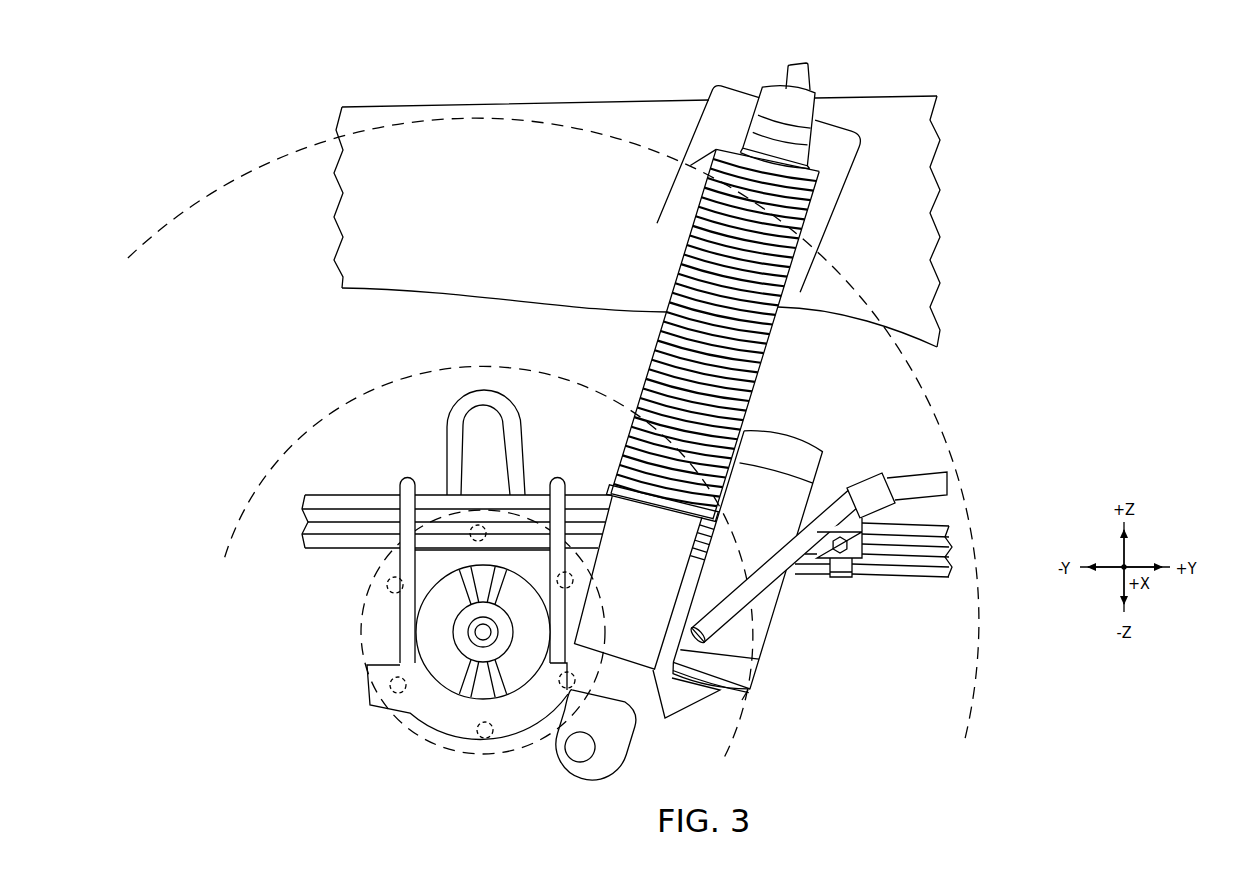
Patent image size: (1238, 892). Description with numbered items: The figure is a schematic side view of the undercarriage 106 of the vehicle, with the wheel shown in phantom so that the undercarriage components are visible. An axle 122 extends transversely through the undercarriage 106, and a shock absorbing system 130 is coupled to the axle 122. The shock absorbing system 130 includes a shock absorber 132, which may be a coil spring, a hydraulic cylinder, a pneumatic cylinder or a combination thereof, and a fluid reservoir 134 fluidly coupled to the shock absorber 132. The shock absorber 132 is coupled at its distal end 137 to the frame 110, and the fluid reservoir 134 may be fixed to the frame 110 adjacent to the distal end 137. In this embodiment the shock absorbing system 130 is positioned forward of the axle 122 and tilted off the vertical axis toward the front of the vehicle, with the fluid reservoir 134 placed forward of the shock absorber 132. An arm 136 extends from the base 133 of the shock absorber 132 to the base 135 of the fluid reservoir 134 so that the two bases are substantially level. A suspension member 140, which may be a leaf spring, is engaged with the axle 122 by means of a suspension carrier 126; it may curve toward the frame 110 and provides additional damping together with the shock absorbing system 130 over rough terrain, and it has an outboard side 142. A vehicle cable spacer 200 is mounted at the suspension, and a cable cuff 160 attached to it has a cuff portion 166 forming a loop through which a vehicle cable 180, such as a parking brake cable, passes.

The undercarriage 106 is at (256, 119).
The frame 110 is at (383, 99).
The axle 122 is at (417, 607).
The suspension carrier 126 is at (371, 698).
The shock absorbing system 130 is at (709, 421).
The shock absorber 132 is at (817, 164).
The base of the shock absorber 133 is at (575, 644).
The fluid reservoir 134 is at (794, 428).
The base of the fluid reservoir 135 is at (775, 700).
The arm 136 is at (678, 713).
The distal end of the shock absorber 137 is at (762, 79).
The suspension member 140 is at (351, 461).
The outboard side of the suspension member 142 is at (331, 495).
The cable cuff 160 is at (848, 479).
The cuff portion 166 is at (887, 473).
The vehicle cable 180 is at (969, 475).
The vehicle cable spacer 200 is at (873, 570).